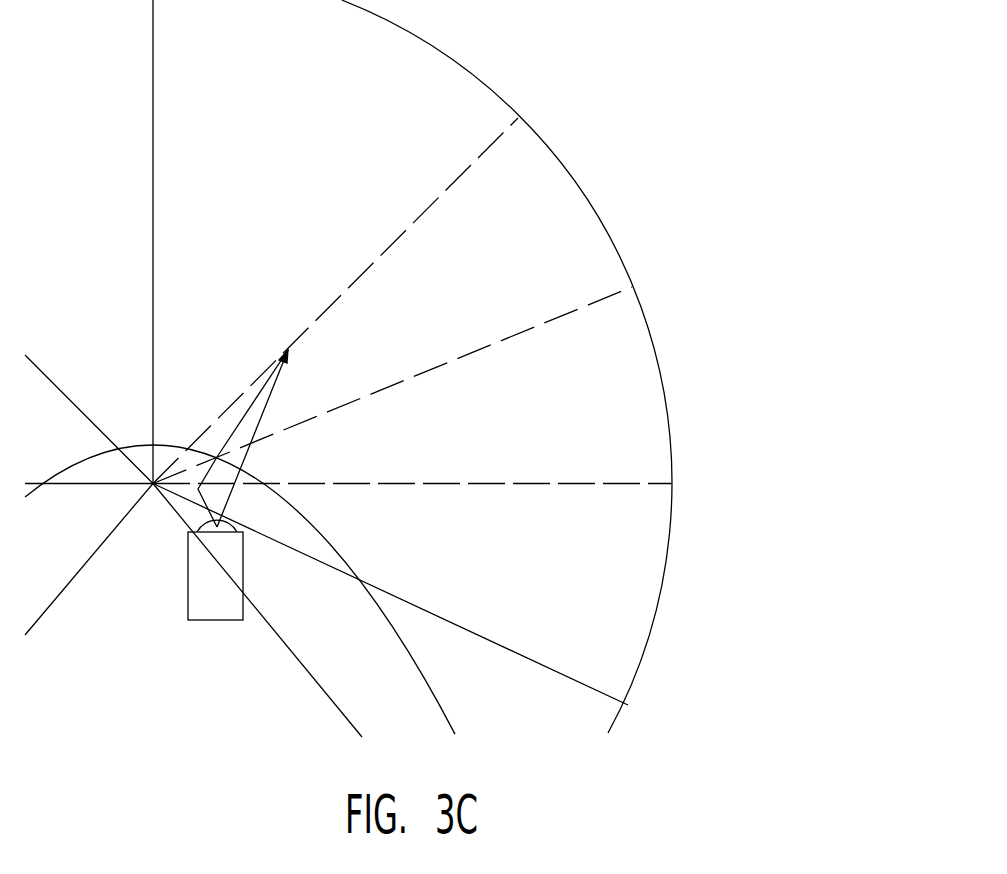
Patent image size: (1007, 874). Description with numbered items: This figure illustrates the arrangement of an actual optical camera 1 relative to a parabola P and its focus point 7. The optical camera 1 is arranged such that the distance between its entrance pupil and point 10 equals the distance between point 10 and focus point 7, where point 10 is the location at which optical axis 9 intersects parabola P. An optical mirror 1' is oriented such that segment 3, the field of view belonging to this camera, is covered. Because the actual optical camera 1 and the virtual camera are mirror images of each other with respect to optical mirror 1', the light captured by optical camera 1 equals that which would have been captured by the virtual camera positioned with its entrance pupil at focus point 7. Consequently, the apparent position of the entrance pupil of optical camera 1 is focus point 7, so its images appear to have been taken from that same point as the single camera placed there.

The optical camera 1 is at (187, 632).
The optical mirror 1' is at (252, 388).
The segment 3 is at (580, 187).
The focus point 7 is at (130, 445).
The optical axis 9 is at (508, 340).
The point 10 is at (217, 455).
The parabola P is at (420, 668).